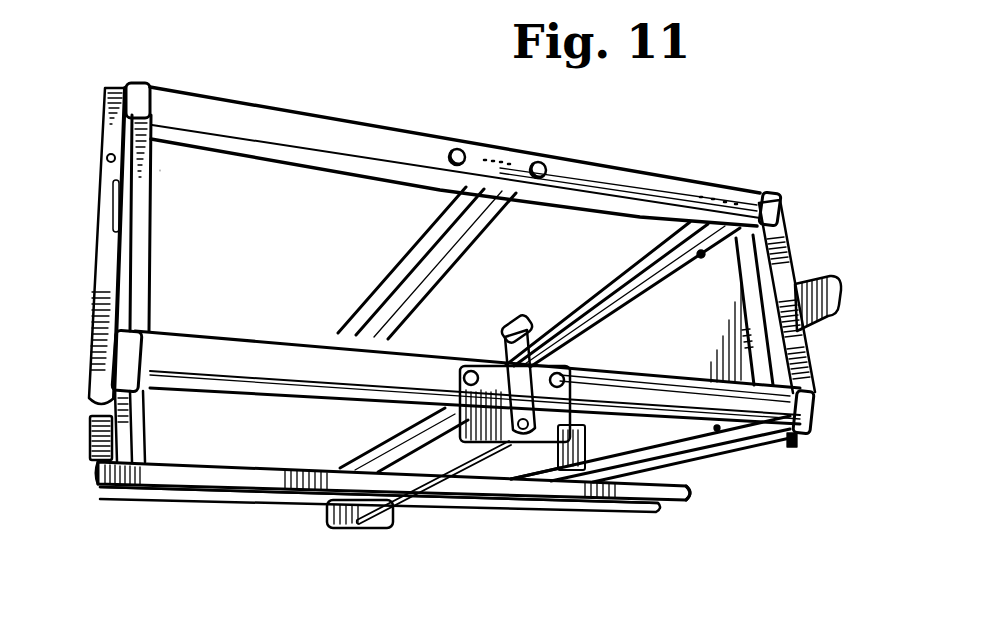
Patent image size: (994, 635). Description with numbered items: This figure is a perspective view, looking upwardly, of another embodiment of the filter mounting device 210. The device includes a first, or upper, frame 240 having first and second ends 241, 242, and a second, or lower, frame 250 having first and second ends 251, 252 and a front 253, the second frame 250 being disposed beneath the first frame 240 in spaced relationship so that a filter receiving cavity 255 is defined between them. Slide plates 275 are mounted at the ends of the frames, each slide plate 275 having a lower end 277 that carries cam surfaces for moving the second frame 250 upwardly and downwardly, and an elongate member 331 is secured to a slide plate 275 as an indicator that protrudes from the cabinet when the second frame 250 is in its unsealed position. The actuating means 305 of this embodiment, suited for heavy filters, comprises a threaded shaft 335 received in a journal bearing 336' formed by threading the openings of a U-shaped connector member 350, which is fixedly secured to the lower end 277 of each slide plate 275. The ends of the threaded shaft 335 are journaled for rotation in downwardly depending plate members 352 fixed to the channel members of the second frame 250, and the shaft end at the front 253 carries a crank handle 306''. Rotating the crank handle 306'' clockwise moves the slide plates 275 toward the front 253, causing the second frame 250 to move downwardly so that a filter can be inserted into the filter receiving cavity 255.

The filter mounting device 210 is at (727, 138).
The first frame 240 is at (622, 172).
The first end of first frame 241 is at (123, 81).
The second end of first frame 242 is at (764, 190).
The second frame 250 is at (243, 340).
The first end of second frame 251 is at (147, 327).
The second end of second frame 252 is at (791, 448).
The front of second frame 253 is at (330, 338).
The filter receiving cavity 255 is at (347, 192).
The slide plate 275 is at (782, 253).
The lower end of slide plate 277 is at (93, 466).
The actuating means 305 is at (460, 523).
The crank handle 306'' is at (533, 344).
The elongate member 331 is at (842, 290).
The threaded shaft 335 is at (481, 452).
The journal bearing 336' is at (434, 510).
The U-shaped connector member 350 is at (177, 500).
The downwardly depending plate member 352 is at (330, 527).